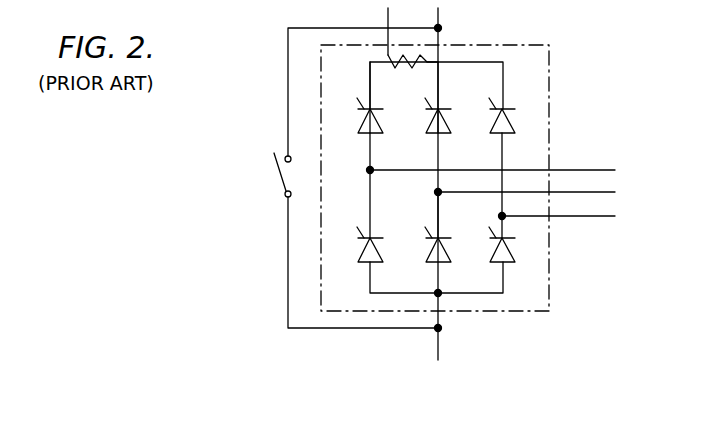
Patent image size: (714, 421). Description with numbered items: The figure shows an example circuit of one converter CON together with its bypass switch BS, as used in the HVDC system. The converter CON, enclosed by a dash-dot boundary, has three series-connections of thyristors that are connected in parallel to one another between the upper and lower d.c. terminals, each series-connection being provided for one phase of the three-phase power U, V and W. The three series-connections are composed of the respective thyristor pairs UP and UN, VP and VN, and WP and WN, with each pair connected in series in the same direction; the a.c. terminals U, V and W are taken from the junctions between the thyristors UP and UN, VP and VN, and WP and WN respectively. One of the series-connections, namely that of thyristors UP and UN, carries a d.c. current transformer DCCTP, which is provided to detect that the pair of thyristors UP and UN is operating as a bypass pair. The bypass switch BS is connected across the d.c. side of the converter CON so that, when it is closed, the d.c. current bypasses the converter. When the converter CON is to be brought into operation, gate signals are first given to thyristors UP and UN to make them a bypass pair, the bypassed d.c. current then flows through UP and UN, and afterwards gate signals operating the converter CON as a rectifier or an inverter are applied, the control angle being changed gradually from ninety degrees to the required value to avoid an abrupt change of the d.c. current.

The bypass switch BS is at (281, 182).
The converter CON is at (548, 45).
The d.c. current transformer DCCTP is at (437, 79).
The thyristor Up UP is at (381, 116).
The thyristor Vp VP is at (448, 114).
The thyristor Wp WP is at (514, 157).
The thyristor Un UN is at (381, 231).
The thyristor Vn VN is at (448, 242).
The thyristor Wn WN is at (514, 254).
The three-phase power U is at (500, 171).
The three-phase power V is at (534, 193).
The three-phase power W is at (568, 217).